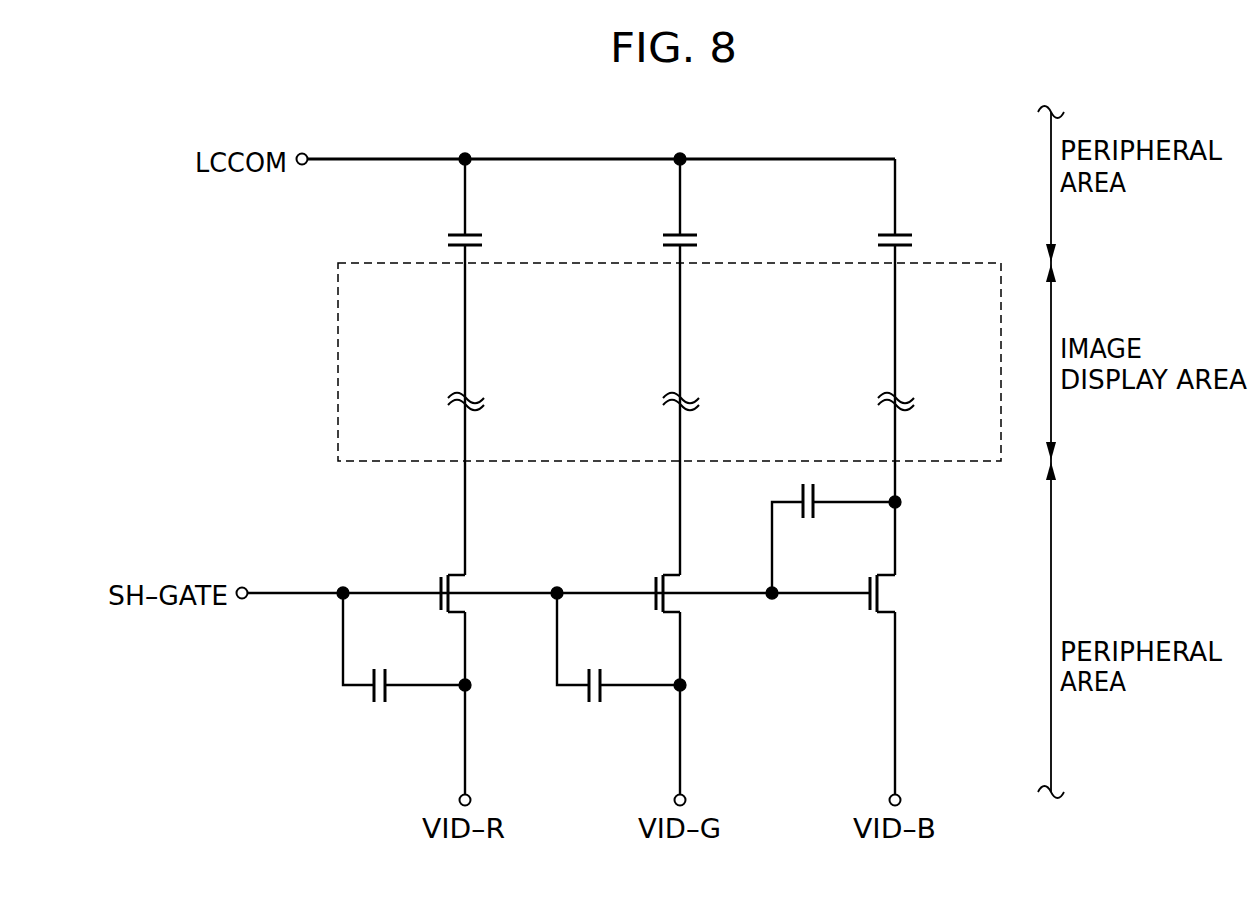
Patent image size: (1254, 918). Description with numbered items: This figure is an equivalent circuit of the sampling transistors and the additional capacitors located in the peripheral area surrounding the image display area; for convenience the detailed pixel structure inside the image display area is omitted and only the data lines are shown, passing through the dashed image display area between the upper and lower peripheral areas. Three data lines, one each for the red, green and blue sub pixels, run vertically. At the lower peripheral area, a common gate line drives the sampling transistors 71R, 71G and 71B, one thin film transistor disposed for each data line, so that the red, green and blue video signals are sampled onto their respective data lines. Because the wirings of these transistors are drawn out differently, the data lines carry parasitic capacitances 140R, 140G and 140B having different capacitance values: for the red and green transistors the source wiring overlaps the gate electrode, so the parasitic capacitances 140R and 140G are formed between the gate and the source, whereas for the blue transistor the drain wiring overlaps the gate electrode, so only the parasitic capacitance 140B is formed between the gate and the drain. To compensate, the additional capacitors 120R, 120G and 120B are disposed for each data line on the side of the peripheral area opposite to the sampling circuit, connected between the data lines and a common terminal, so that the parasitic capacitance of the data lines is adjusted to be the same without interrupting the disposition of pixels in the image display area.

The additional capacitor 120R is at (458, 230).
The additional capacitor 120G is at (672, 230).
The additional capacitor 120B is at (888, 230).
The sampling transistor 71R is at (452, 572).
The sampling transistor 71G is at (667, 572).
The sampling transistor 71B is at (879, 618).
The parasitic capacitance 140R is at (370, 692).
The parasitic capacitance 140G is at (584, 692).
The parasitic capacitance 140B is at (819, 508).